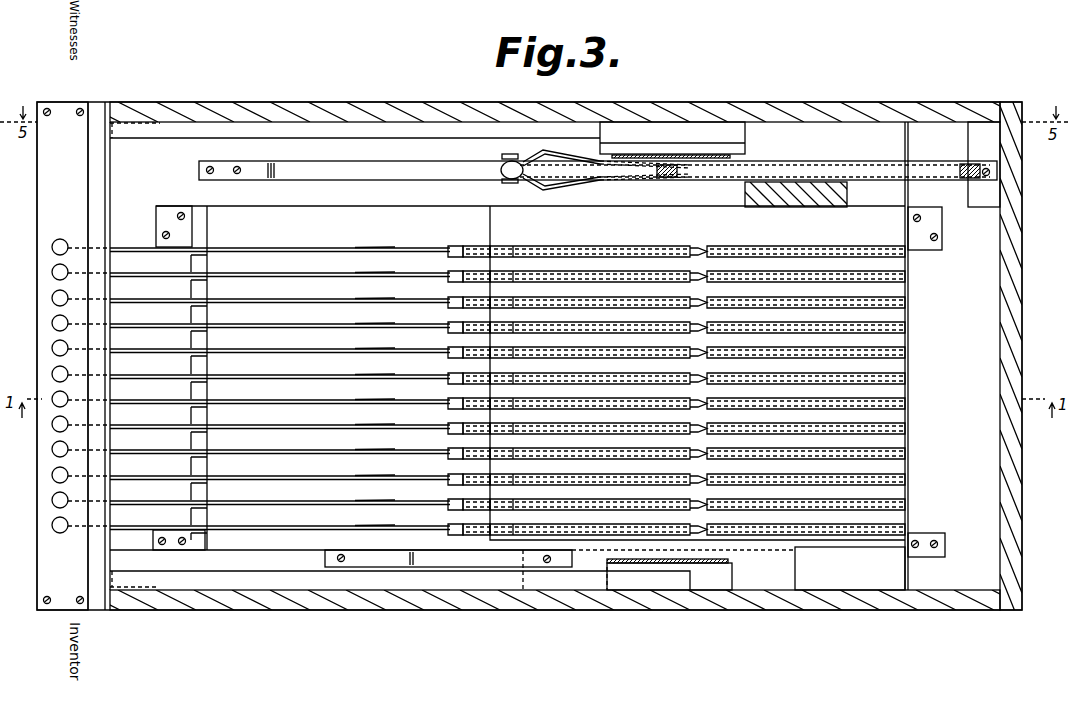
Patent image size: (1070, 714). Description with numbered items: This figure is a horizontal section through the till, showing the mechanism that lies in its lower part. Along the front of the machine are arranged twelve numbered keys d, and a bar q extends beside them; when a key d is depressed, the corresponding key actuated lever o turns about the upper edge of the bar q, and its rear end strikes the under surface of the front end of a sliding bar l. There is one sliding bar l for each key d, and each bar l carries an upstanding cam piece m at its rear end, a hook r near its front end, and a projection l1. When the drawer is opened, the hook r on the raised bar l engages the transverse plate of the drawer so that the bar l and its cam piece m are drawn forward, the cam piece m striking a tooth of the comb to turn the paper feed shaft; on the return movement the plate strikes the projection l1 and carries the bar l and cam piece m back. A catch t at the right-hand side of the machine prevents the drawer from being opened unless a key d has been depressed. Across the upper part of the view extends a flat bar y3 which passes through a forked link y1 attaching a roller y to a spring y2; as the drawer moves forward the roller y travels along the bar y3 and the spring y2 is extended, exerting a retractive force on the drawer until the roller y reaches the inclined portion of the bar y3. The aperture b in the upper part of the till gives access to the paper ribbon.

The key d is at (63, 238).
The bar q is at (112, 197).
The flat bar y3 is at (366, 179).
The roller y is at (505, 168).
The forked link y1 is at (563, 157).
The spring y2 is at (682, 178).
The aperture b is at (987, 176).
The key actuated lever o is at (277, 250).
The hook r is at (450, 245).
The projection l1 is at (498, 248).
The sliding bar l is at (590, 248).
The cam piece m is at (900, 279).
The catch t is at (455, 567).